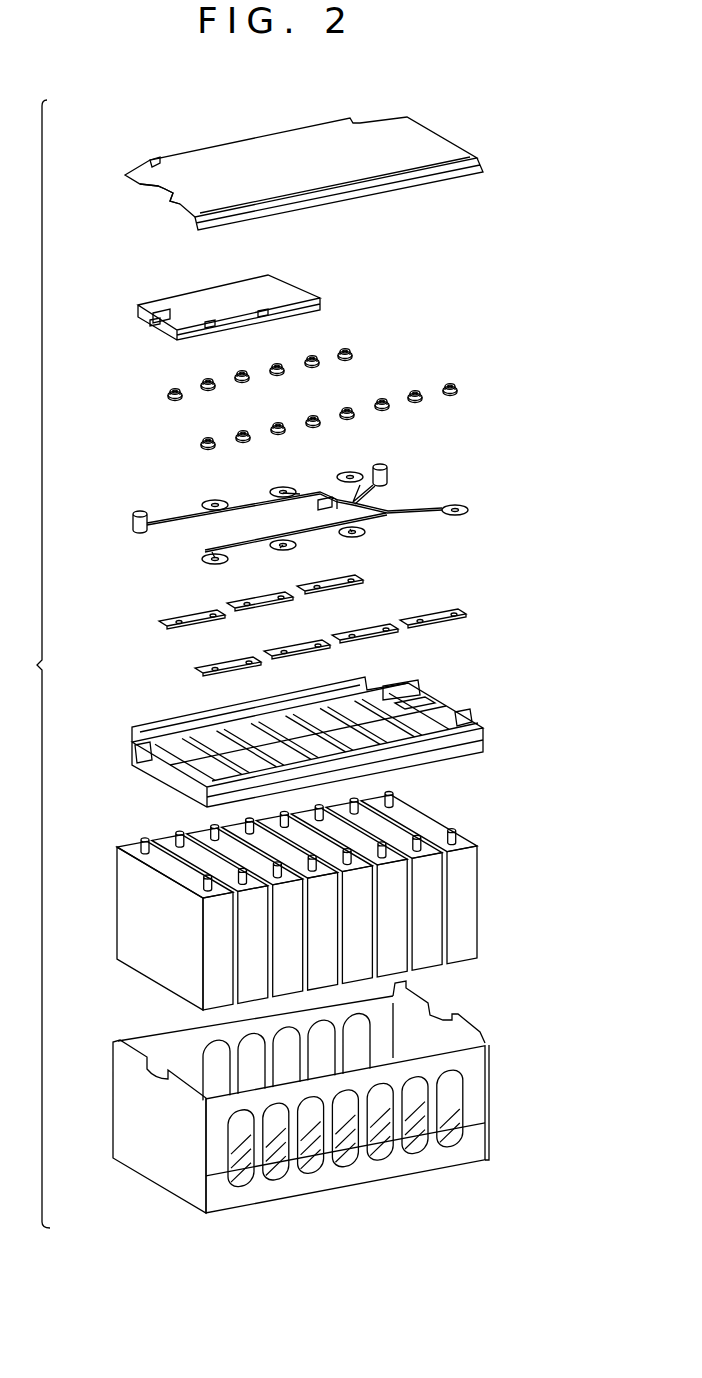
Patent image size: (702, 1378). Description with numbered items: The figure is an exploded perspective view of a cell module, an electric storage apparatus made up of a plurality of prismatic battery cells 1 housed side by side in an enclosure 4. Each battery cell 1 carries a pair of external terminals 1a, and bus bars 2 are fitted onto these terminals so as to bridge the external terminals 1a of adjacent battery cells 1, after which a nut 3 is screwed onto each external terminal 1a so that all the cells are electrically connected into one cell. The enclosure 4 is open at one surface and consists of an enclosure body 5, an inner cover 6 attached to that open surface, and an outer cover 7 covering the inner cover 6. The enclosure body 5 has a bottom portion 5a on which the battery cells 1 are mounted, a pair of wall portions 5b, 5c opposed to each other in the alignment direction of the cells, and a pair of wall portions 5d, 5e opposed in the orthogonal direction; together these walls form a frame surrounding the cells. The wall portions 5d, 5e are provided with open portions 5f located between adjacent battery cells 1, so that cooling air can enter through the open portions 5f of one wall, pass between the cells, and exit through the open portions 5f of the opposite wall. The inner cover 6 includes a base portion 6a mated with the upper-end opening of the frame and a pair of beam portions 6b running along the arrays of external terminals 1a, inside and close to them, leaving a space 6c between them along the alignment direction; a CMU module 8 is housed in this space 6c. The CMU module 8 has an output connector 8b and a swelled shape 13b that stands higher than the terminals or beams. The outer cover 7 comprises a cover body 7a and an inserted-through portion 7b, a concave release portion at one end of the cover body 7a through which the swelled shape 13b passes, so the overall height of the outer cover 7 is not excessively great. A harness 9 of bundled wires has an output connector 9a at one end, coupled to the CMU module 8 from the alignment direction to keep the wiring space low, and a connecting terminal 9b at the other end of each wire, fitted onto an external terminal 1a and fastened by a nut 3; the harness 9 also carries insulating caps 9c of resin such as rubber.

The battery cell 1 is at (324, 903).
The external terminal 1a is at (137, 838).
The bus bar 2 is at (478, 577).
The nut 3 is at (463, 347).
The enclosure 4 is at (43, 664).
The enclosure body 5 is at (348, 1114).
The bottom portion 5a is at (347, 1150).
The wall portion 5b is at (160, 1158).
The wall portion 5c is at (458, 1035).
The wall portion 5d is at (318, 1183).
The wall portion 5e is at (193, 1043).
The open portion 5f is at (217, 1067).
The inner cover 6 is at (330, 723).
The base portion 6a is at (410, 717).
The beam portion 6b is at (413, 697).
The space 6c is at (160, 762).
The outer cover 7 is at (326, 155).
The cover body 7a is at (278, 157).
The inserted-through portion 7b is at (158, 188).
The CMU module 8 is at (229, 303).
The output connector 8b is at (149, 326).
The harness 9 is at (303, 495).
The output connector 9a is at (319, 509).
The connecting terminal 9b is at (205, 501).
The insulating cap 9c is at (388, 470).
The swelled shape 13b is at (176, 310).